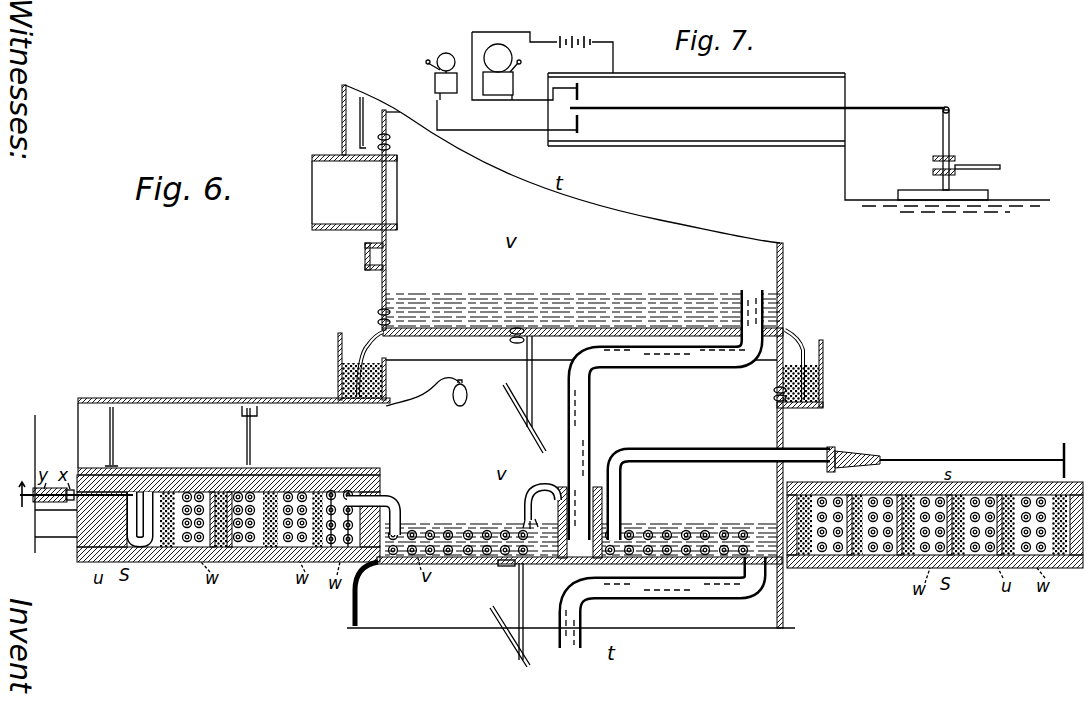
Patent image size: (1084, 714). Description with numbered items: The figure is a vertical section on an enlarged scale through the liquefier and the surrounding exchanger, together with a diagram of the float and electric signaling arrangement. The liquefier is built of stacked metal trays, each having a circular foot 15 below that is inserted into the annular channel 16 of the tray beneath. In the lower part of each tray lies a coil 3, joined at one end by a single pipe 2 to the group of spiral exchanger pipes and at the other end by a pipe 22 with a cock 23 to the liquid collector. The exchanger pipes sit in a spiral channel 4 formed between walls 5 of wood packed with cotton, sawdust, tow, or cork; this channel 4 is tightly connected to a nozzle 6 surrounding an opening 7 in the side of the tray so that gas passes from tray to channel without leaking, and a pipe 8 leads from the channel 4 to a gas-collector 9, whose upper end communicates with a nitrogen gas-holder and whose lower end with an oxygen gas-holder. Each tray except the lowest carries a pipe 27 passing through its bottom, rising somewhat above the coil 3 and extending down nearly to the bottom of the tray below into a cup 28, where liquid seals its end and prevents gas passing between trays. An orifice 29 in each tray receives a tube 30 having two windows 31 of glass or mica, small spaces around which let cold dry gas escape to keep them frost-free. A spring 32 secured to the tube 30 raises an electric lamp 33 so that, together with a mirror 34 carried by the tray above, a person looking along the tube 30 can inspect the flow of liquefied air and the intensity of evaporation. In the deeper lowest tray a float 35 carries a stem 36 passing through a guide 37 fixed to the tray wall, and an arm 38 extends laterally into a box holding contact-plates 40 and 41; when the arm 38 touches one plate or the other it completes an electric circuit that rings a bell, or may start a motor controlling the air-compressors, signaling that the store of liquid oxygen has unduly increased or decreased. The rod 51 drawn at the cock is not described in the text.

In FIG. 6, the single pipe 2 is at (398, 505).
In FIG. 6, the coil 3 is at (715, 525).
In FIG. 6, the channel 4 is at (832, 568).
In FIG. 6, the walls 5 is at (868, 568).
In FIG. 6, the nozzle 6 is at (362, 272).
In FIG. 6, the opening 7 is at (380, 258).
In FIG. 6, the pipe 8 is at (91, 517).
In FIG. 6, the gas-collector 9 is at (71, 484).
In FIG. 6, the circular foot 15 is at (360, 142).
In FIG. 6, the annular channel 16 is at (338, 120).
In FIG. 6, the pipe 22 is at (722, 488).
In FIG. 6, the cock 23 is at (853, 454).
In FIG. 6, the pipe 27 is at (592, 446).
In FIG. 6, the cup 28 is at (552, 484).
In FIG. 6, the orifice 29 is at (344, 233).
In FIG. 6, the tube 30 is at (237, 315).
In FIG. 6, the windows 31 is at (190, 436).
In FIG. 6, the spring 32 is at (423, 399).
In FIG. 6, the electric lamp 33 is at (471, 398).
In FIG. 6, the mirror 34 is at (514, 527).
In FIG. 6, the rod 51 is at (1060, 460).
In FIG. 7, the float 35 is at (975, 195).
In FIG. 7, the stem 36 is at (950, 138).
In FIG. 7, the guide 37 is at (962, 167).
In FIG. 7, the arm 38 is at (893, 100).
In FIG. 7, the contact-plate 40 is at (580, 90).
In FIG. 7, the contact-plate 41 is at (580, 122).